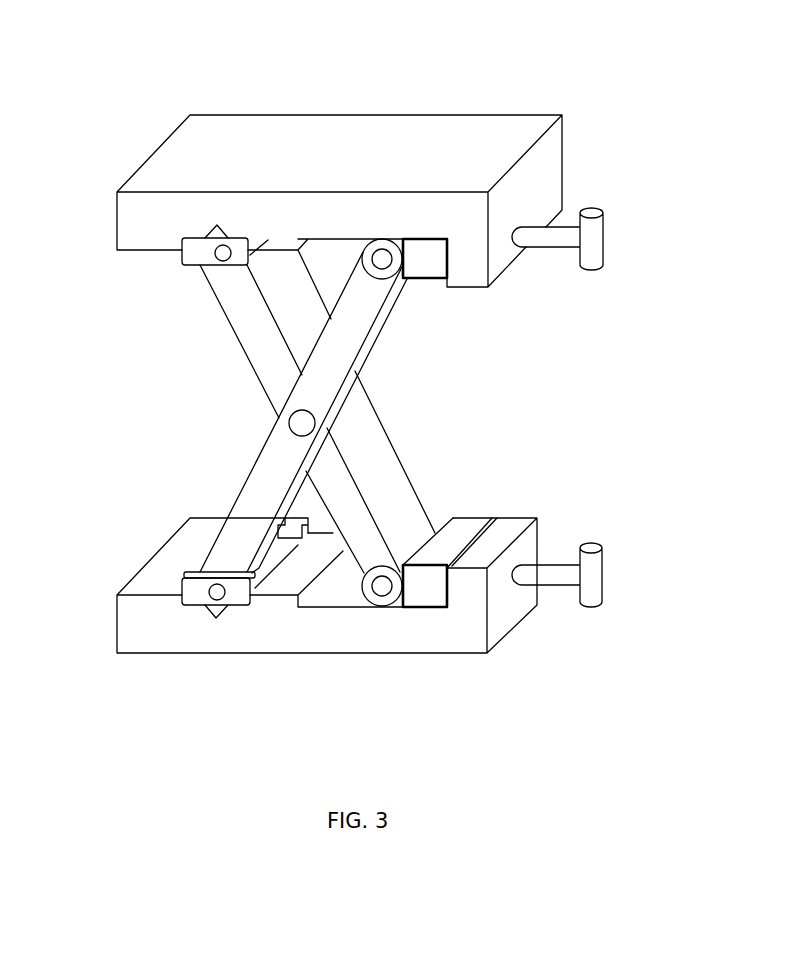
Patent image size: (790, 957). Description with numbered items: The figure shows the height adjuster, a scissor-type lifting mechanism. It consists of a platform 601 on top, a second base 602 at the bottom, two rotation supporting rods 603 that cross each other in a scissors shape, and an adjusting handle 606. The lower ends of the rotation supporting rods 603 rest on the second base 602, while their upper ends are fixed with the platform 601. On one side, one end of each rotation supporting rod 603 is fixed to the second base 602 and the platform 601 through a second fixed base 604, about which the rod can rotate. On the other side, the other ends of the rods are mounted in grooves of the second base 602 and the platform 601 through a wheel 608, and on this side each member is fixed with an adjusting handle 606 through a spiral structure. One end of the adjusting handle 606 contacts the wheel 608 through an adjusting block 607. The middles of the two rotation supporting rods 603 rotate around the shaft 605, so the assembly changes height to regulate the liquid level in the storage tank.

The platform 601 is at (242, 155).
The second base 602 is at (140, 637).
The rotation supporting rod 603 is at (258, 489).
The second fixed base 604 is at (202, 252).
The shaft 605 is at (302, 423).
The adjusting handle 606 is at (587, 577).
The adjusting block 607 is at (453, 537).
The wheel 608 is at (377, 238).